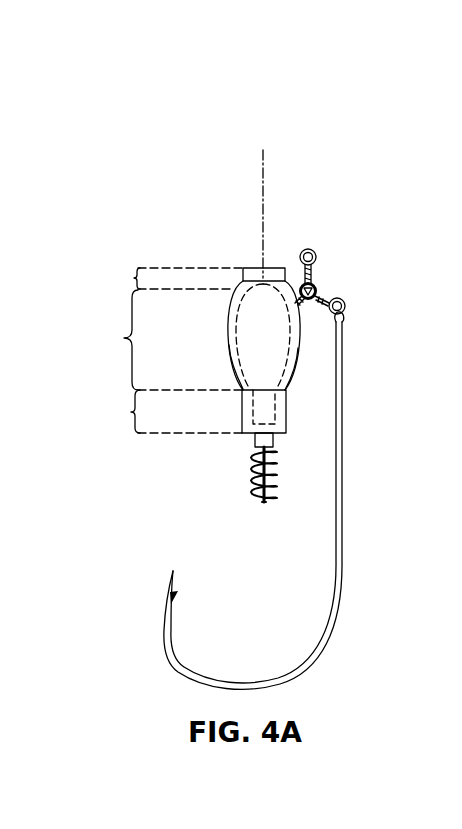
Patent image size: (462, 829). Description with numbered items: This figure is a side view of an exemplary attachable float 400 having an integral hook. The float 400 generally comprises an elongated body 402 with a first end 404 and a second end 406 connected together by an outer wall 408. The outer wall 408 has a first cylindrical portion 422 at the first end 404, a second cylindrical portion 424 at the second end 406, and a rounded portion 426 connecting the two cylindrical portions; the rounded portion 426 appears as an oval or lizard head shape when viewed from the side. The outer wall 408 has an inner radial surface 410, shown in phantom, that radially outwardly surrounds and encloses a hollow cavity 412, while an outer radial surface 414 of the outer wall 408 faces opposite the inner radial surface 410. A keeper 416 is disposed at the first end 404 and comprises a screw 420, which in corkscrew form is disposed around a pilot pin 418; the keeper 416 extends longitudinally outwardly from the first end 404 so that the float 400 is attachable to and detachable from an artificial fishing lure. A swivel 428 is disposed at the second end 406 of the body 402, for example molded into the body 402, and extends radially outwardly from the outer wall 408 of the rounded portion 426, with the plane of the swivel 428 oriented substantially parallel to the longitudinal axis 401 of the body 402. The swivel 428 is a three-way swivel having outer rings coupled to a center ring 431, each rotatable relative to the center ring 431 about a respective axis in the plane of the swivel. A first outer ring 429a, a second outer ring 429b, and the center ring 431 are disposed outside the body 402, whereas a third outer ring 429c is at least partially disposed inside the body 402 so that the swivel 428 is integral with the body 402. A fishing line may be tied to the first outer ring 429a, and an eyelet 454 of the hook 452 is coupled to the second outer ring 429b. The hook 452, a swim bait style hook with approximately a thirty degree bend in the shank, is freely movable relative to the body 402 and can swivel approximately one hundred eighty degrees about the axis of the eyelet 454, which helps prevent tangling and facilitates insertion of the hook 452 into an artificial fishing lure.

The attachable float 400 is at (106, 173).
The longitudinal axis 401 is at (263, 152).
The elongated body 402 is at (233, 293).
The first end 404 is at (276, 438).
The second end 406 is at (245, 266).
The outer wall 408 is at (229, 357).
The inner radial surface 410 is at (289, 378).
The hollow cavity 412 is at (280, 418).
The outer radial surface 414 is at (228, 348).
The keeper 416 is at (247, 472).
The pilot pin 418 is at (265, 502).
The screw 420 is at (253, 488).
The first cylindrical portion 422 is at (131, 412).
The second cylindrical portion 424 is at (133, 277).
The rounded portion 426 is at (123, 338).
The swivel 428 is at (361, 260).
The first outer ring 429a is at (310, 249).
The second outer ring 429b is at (342, 300).
The third outer ring 429c is at (300, 302).
The center ring 431 is at (314, 274).
The hook 452 is at (343, 410).
The eyelet 454 is at (344, 319).